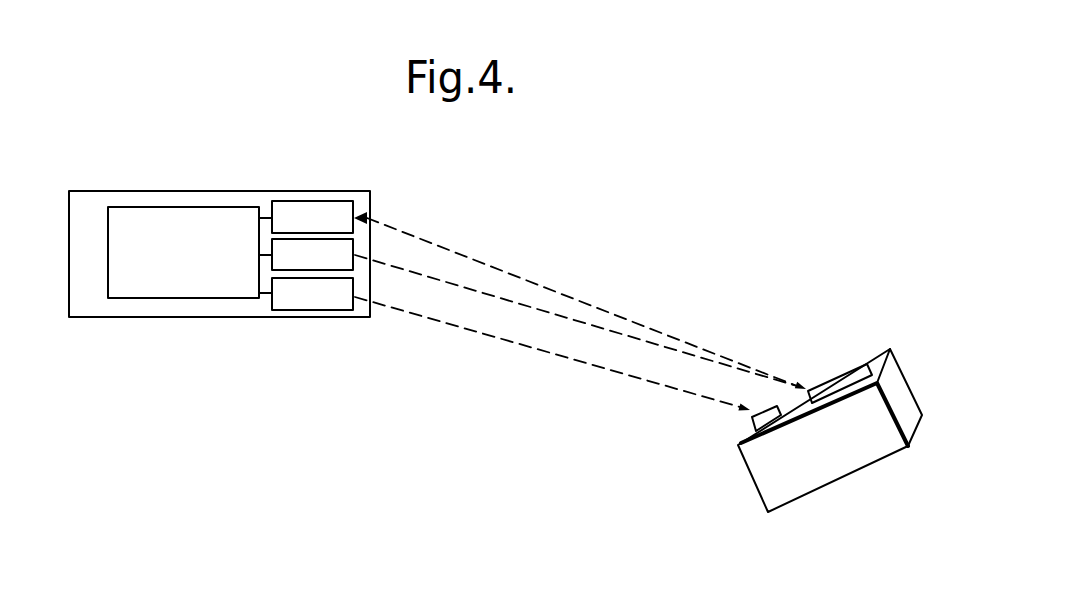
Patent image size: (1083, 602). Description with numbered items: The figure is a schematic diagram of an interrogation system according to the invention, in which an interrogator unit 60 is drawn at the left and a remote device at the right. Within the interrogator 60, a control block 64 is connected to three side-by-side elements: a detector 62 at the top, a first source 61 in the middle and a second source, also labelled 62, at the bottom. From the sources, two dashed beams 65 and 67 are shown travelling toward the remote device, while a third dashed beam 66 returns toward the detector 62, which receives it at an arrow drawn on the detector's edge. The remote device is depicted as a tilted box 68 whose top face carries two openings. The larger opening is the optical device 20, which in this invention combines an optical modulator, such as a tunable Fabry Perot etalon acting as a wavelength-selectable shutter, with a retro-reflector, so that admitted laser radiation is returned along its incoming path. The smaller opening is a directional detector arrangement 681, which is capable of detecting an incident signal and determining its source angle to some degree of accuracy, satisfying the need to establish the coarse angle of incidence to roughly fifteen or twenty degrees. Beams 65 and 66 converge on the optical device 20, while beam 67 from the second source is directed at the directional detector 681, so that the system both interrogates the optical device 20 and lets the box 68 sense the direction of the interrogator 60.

The sensor unit housing 60 is at (343, 191).
The controller 64 is at (218, 300).
The detector / second source 62 is at (297, 202).
The first source 61 is at (353, 252).
The first source beam 65 is at (552, 313).
The reflected beam to detector 66 is at (595, 308).
The second source beam 67 is at (457, 323).
The device body 68 is at (750, 480).
The optical device 20 is at (848, 367).
The directional detector arrangement 681 is at (742, 423).